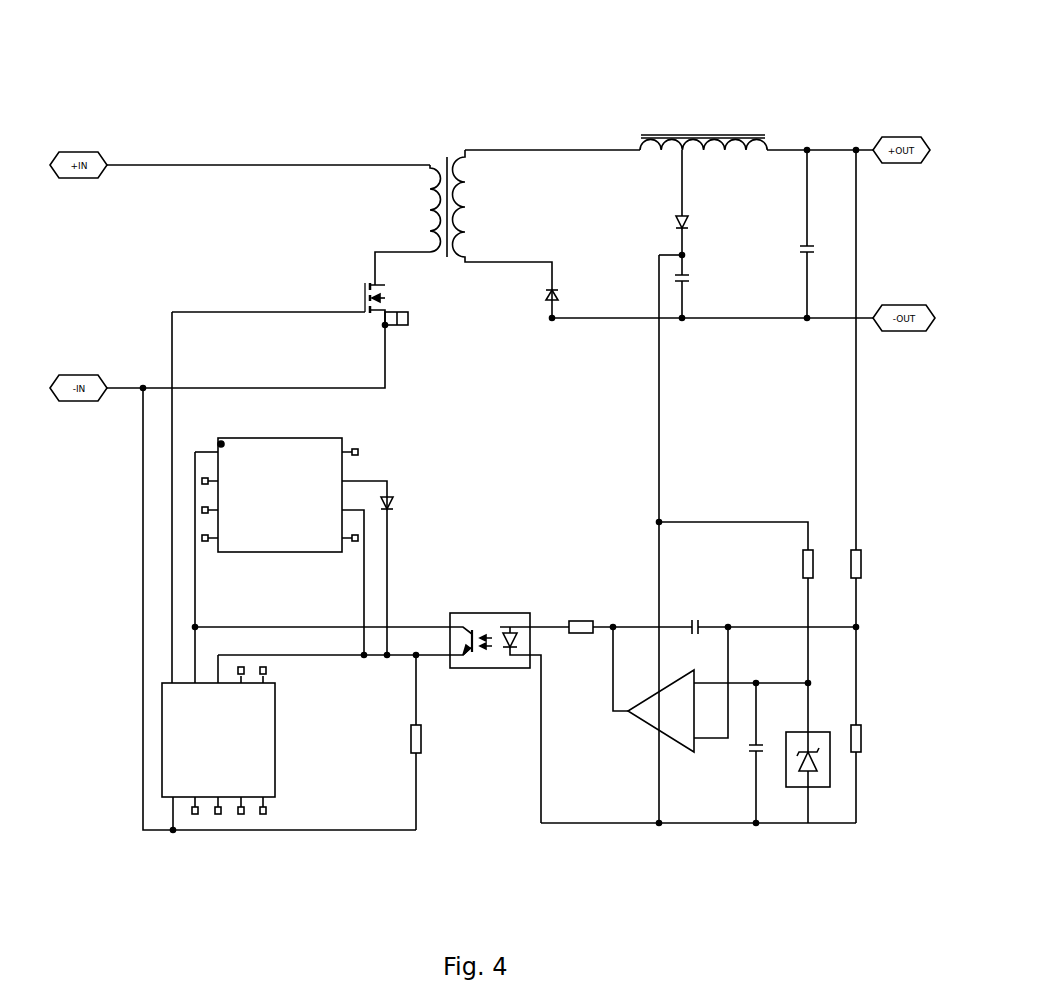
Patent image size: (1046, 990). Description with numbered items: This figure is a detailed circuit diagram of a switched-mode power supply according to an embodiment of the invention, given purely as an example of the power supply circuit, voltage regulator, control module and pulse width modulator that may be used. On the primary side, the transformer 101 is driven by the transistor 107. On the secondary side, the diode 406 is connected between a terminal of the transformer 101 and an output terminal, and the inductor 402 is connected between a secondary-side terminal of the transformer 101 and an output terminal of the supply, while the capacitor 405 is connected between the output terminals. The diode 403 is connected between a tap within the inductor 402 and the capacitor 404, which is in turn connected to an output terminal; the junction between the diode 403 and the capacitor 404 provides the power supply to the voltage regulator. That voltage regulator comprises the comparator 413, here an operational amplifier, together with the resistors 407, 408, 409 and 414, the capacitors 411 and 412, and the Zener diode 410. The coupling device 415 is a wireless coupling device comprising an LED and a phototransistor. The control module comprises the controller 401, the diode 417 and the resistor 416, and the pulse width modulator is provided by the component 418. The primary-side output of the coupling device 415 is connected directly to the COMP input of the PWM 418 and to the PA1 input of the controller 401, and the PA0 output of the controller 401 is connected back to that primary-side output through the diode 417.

The transformer 101 is at (468, 148).
The transistor 107 is at (357, 296).
The controller 401 is at (338, 436).
The inductor 402 is at (730, 133).
The diode 403 is at (692, 222).
The capacitor 404 is at (693, 276).
The capacitor 405 is at (813, 246).
The diode 406 is at (563, 310).
The resistor 407 is at (815, 542).
The resistor 408 is at (866, 565).
The resistor 409 is at (866, 748).
The Zener diode 410 is at (818, 780).
The capacitor 411 is at (750, 757).
The capacitor 412 is at (702, 622).
The comparator 413 is at (639, 728).
The resistor 414 is at (590, 619).
The coupling device 415 is at (452, 608).
The resistor 416 is at (423, 748).
The diode 417 is at (400, 511).
The PWM 418 is at (277, 768).